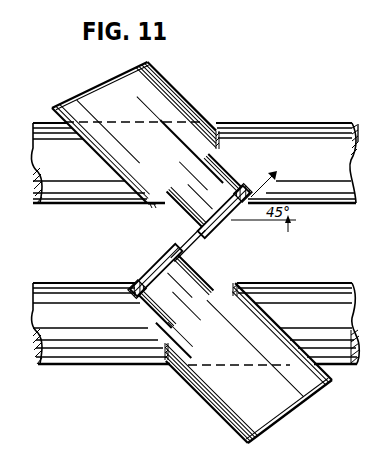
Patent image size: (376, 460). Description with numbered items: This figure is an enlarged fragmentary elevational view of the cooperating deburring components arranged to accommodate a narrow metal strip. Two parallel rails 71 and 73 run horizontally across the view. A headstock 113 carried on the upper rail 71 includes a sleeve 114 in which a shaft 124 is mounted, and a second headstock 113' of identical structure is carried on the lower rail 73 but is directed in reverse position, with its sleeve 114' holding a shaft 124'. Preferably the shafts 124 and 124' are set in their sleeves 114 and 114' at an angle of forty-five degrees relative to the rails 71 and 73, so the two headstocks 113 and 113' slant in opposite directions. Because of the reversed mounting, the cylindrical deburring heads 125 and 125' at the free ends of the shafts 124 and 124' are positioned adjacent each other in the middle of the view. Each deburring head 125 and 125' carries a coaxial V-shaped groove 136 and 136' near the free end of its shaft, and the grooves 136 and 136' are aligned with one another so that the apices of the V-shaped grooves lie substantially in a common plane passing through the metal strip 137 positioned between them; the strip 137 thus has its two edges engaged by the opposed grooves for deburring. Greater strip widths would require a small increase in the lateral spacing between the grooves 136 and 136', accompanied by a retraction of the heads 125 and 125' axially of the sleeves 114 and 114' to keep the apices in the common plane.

The rail 71 is at (300, 130).
The rail 73 is at (296, 289).
The headstock 113 is at (149, 134).
The sleeve 114 is at (189, 103).
The shaft 124 is at (189, 190).
The deburring head 125 is at (233, 214).
The V-shaped groove 136 is at (240, 173).
The metal strip 137 is at (196, 246).
The second headstock 113' is at (237, 358).
The sleeve 114' is at (207, 394).
The shaft 124' is at (164, 296).
The deburring head 125' is at (148, 268).
The V-shaped groove 136' is at (108, 277).